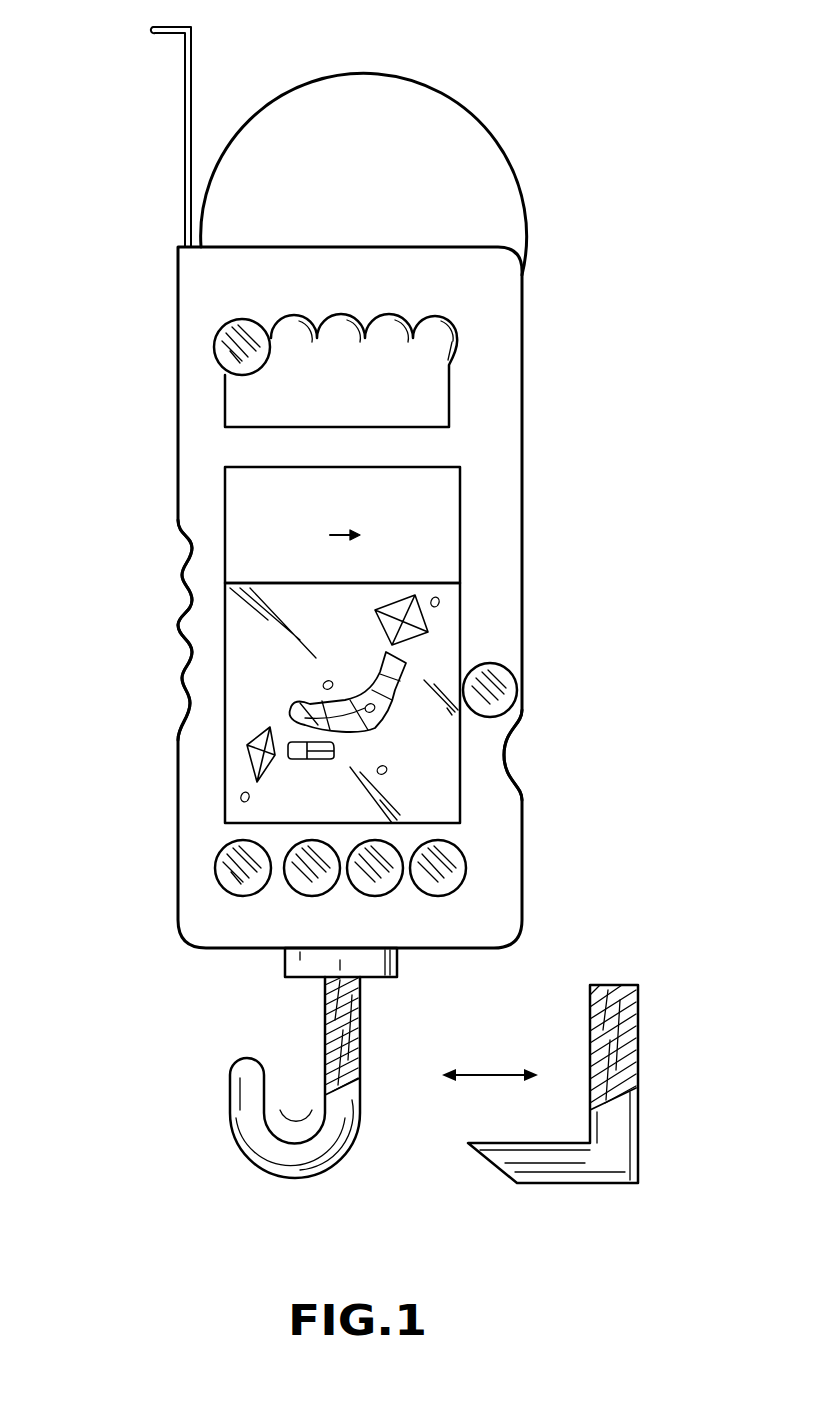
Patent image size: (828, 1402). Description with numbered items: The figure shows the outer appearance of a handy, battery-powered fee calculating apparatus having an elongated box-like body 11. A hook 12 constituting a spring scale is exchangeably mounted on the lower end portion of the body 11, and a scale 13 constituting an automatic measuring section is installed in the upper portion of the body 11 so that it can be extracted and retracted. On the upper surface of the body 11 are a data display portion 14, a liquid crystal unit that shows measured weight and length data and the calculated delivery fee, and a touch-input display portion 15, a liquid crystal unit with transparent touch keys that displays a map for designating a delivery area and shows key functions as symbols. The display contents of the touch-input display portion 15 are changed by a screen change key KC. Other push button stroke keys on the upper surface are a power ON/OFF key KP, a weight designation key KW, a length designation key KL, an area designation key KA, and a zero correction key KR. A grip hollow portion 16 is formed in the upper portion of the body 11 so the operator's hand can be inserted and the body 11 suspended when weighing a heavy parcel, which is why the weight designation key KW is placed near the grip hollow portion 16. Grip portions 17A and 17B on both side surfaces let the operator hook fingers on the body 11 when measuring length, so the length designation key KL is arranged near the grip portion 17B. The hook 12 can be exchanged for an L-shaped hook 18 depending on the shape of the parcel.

The body 11 is at (500, 438).
The hook 12 is at (337, 1167).
The scale 13 is at (184, 125).
The data display portion 14 is at (452, 503).
The touch-input display portion 15 is at (448, 805).
The grip hollow portion 16 is at (440, 390).
The grip portion 17A is at (178, 625).
The grip portion 17B is at (512, 760).
The L-shaped hook 18 is at (630, 1140).
The weight designation key KW is at (216, 342).
The length designation key KL is at (516, 692).
The correction key KR is at (215, 868).
The area designation key KA is at (290, 845).
The screen change key KC is at (400, 887).
The power ON/OFF key KP is at (466, 868).